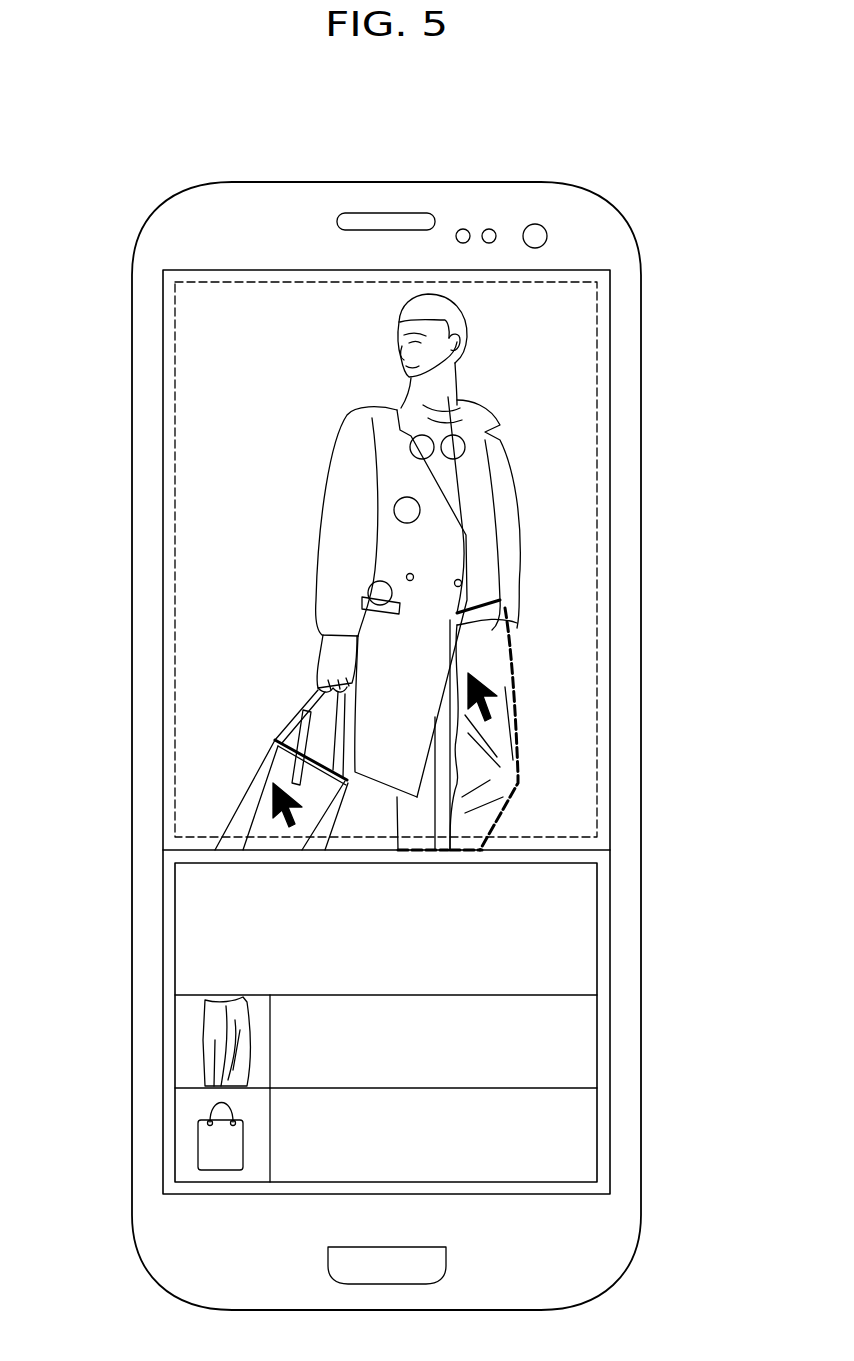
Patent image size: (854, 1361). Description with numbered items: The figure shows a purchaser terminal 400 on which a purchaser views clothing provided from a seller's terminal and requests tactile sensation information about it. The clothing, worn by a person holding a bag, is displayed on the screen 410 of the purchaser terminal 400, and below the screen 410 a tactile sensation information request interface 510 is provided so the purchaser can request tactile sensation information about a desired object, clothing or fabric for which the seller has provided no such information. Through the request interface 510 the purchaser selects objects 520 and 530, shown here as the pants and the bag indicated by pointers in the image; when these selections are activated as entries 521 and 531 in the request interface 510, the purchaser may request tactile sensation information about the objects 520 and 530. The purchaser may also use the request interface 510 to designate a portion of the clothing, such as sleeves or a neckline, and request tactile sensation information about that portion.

The purchaser terminal 400 is at (425, 180).
The screen 410 is at (396, 685).
The tactile sensation information request interface 510 is at (597, 917).
The object 520 is at (490, 700).
The activated selection 521 is at (517, 640).
The object 530 is at (275, 805).
The activated selection 531 is at (597, 1133).